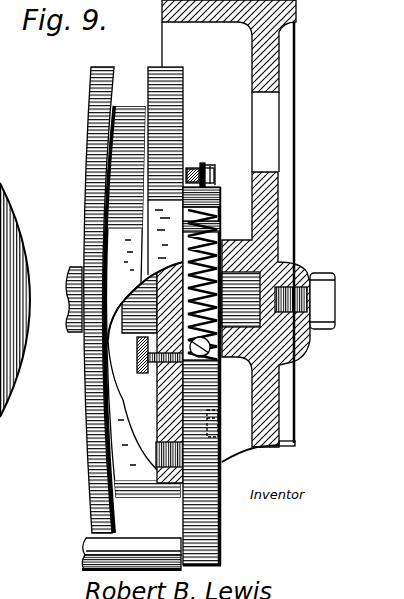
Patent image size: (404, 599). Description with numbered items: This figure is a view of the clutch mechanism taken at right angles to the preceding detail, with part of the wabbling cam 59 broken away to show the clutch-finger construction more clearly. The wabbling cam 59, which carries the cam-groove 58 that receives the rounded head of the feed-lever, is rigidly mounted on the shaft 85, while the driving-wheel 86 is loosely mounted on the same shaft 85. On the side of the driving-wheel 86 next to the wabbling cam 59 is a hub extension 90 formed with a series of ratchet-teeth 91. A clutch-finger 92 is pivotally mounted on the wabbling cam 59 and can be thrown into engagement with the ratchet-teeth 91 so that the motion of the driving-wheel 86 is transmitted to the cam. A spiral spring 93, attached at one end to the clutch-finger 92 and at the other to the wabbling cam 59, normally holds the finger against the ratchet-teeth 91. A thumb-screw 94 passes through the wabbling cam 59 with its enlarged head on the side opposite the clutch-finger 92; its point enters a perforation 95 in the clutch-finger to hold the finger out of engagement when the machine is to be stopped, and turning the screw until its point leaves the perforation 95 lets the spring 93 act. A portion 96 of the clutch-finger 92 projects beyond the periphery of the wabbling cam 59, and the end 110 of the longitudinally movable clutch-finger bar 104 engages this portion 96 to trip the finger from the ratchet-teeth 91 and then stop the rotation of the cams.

The cam-groove 58 is at (122, 97).
The wabbling cam 59 is at (93, 185).
The shaft 85 is at (72, 269).
The driving-wheel 86 is at (279, 73).
The hub extension 90 is at (231, 241).
The ratchet-teeth 91 is at (220, 203).
The clutch-finger 92 is at (218, 420).
The spiral spring 93 is at (210, 187).
The thumb-screw 94 is at (142, 373).
The perforation 95 is at (206, 368).
The projecting portion of the clutch-finger 96 is at (212, 565).
The clutch-finger bar 104 is at (93, 568).
The end of the clutch-finger bar 110 is at (175, 568).